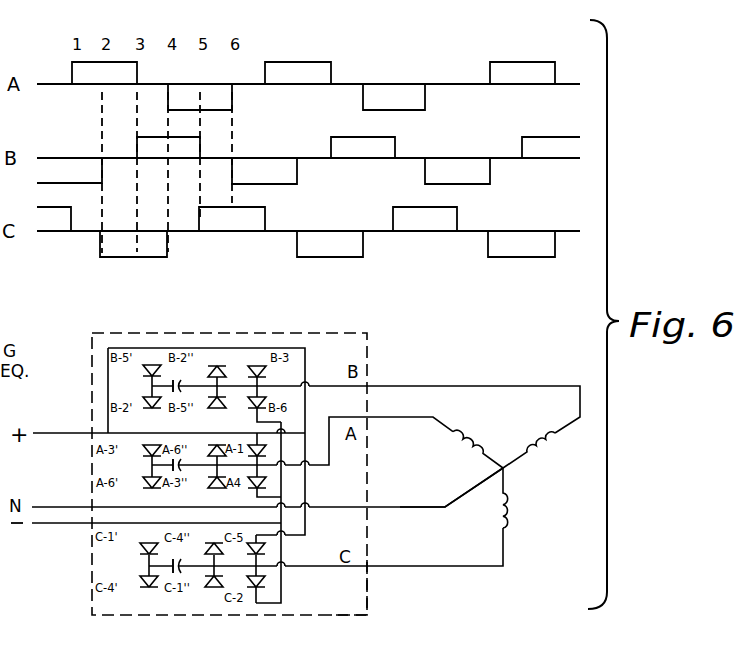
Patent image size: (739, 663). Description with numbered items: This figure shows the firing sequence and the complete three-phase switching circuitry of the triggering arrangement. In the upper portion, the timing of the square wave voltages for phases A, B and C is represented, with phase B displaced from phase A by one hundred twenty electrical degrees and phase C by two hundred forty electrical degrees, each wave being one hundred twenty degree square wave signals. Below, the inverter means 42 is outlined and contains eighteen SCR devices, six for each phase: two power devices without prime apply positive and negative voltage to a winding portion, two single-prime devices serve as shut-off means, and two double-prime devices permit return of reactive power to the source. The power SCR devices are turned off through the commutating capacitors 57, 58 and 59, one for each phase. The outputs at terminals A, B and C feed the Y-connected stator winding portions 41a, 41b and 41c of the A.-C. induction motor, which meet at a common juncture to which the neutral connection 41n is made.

The commutating capacitor 58 is at (184, 386).
The commutating capacitor 57 is at (181, 470).
The commutating capacitor 59 is at (173, 560).
The stator winding portion 41a is at (466, 430).
The stator winding portion 41b is at (548, 437).
The stator winding portion 41c is at (512, 515).
The neutral connection 41n is at (422, 507).
The inverter means 42 is at (365, 600).